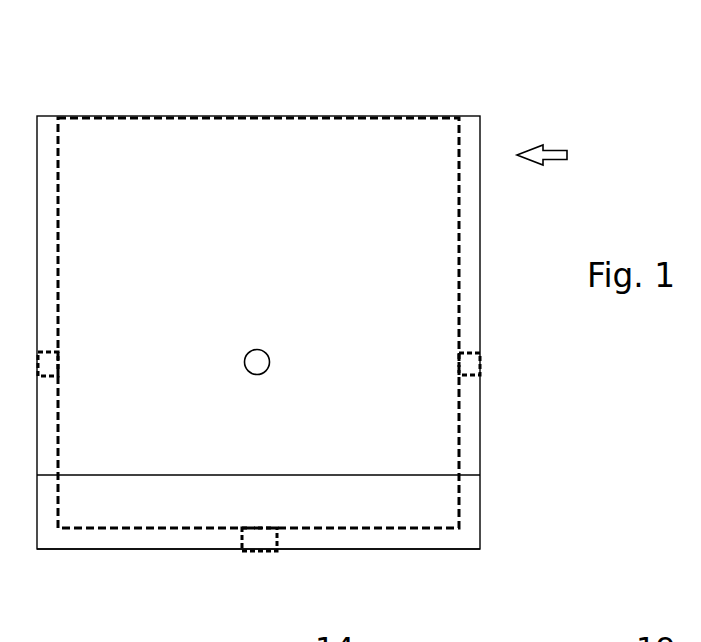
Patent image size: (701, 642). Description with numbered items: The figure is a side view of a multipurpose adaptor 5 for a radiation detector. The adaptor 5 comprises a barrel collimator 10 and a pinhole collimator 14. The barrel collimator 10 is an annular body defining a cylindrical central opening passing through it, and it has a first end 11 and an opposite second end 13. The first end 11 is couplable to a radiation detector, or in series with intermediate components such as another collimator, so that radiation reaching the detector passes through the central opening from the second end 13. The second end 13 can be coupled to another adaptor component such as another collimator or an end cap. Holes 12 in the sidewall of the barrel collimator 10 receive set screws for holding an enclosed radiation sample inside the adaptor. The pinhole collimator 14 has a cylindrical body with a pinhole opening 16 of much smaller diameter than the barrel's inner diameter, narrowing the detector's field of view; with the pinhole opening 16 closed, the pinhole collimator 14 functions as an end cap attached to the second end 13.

The multipurpose adaptor 5 is at (559, 154).
The barrel collimator 10 is at (480, 427).
The first end 11 is at (243, 112).
The holes 12 is at (470, 360).
The second end 13 is at (306, 474).
The pinhole collimator 14 is at (480, 516).
The pinhole opening 16 is at (254, 551).